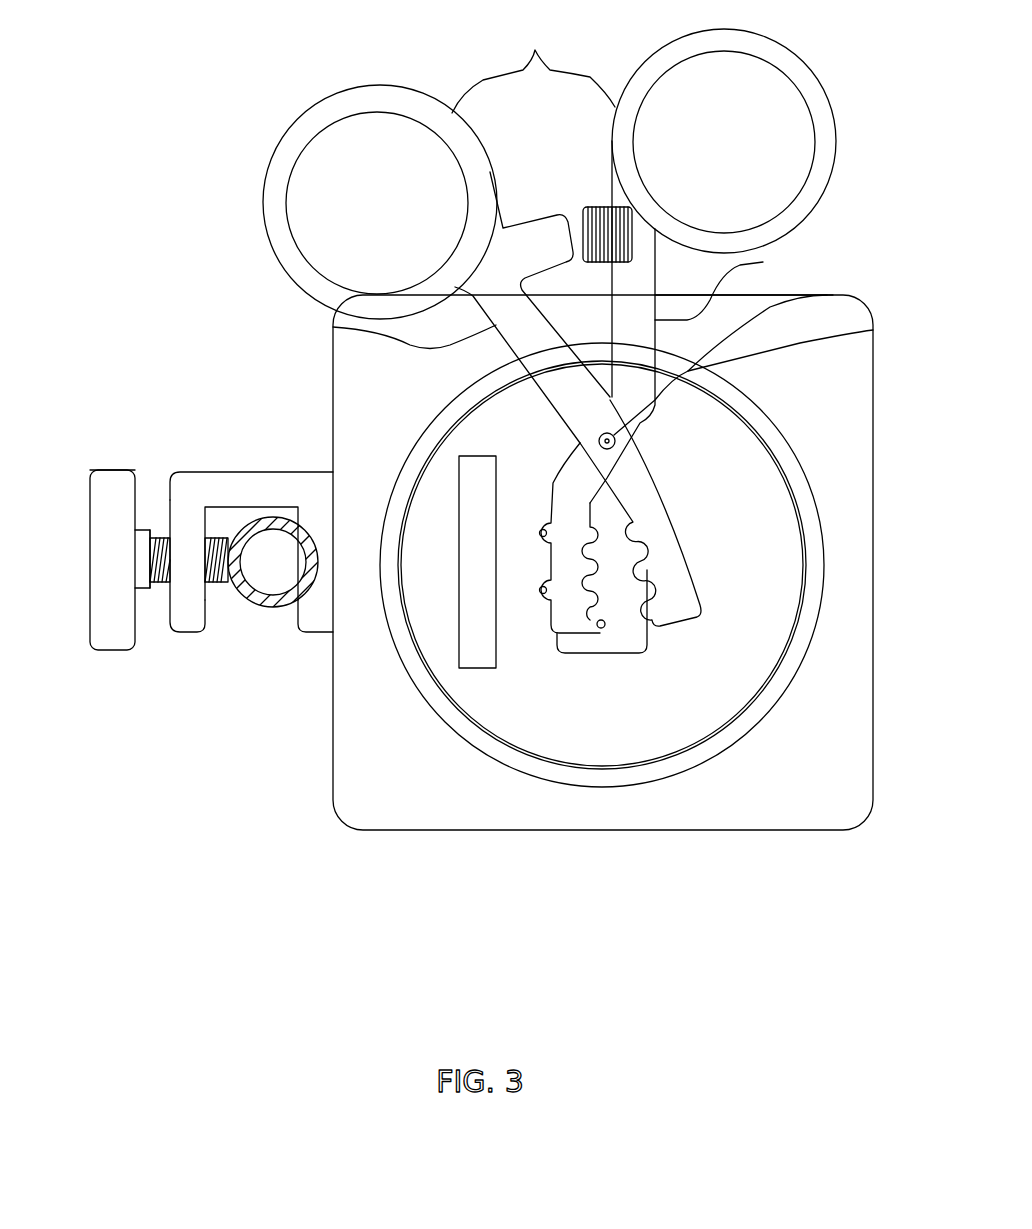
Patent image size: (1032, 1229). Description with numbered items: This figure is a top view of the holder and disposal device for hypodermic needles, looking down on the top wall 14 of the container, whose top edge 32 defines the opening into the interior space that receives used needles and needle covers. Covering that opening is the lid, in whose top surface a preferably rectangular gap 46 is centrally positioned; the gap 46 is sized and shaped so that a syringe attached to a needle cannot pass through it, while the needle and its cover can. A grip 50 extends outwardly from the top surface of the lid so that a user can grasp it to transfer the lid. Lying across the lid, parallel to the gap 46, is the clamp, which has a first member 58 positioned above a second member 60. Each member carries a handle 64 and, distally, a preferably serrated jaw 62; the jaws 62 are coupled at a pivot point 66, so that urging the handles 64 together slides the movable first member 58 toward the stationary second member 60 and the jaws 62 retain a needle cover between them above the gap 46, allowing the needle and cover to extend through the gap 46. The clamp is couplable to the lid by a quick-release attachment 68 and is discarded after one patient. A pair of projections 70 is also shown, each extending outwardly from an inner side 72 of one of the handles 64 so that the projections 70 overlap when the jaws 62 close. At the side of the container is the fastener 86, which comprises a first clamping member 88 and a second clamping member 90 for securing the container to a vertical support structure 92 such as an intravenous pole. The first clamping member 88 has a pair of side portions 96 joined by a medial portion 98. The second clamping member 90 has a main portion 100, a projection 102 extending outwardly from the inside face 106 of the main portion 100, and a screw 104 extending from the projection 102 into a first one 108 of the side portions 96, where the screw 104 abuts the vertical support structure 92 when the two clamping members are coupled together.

The top wall 14 is at (828, 830).
The top edge 32 is at (817, 293).
The gap 46 is at (596, 655).
The grip 50 is at (459, 485).
The first member 58 is at (333, 327).
The second member 60 is at (730, 282).
The jaw 62 is at (603, 628).
The handle 64 is at (439, 229).
The pivot point 66 is at (872, 333).
The quick-release attachment 68 is at (546, 537).
The projections 70 is at (583, 200).
The inner side 72 is at (488, 180).
The fastener 86 is at (152, 452).
The first clamping member 88 is at (245, 470).
The second clamping member 90 is at (88, 470).
The vertical support structure 92 is at (250, 608).
The side portions 96 is at (172, 640).
The medial portion 98 is at (265, 470).
The main portion 100 is at (90, 552).
The projection 102 is at (148, 480).
The screw 104 is at (160, 480).
The inside face 106 is at (140, 648).
The first one of the side portions 108 is at (187, 645).